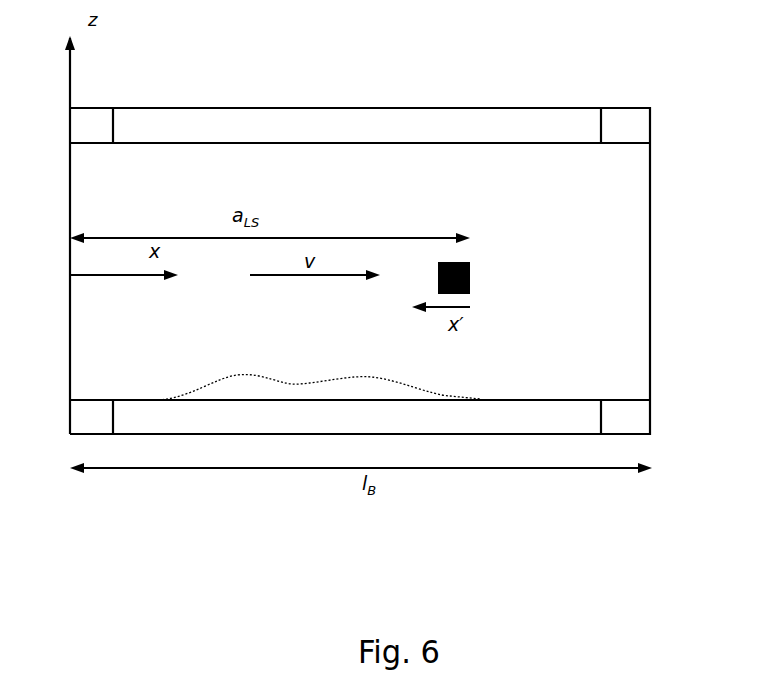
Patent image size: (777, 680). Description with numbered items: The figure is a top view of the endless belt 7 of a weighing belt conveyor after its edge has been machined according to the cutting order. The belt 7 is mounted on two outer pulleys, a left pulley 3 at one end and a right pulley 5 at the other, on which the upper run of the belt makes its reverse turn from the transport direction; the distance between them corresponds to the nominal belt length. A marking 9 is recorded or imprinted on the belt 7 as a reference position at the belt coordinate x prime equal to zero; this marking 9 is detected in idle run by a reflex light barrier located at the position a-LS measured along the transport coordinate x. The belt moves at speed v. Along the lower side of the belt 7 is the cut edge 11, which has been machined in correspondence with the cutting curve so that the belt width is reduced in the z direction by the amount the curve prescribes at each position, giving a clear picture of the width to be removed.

The left pulley 3 is at (93, 108).
The right pulley 5 is at (624, 108).
The endless belt 7 is at (487, 143).
The marking 9 is at (470, 278).
The cut edge of belt 11 is at (251, 380).